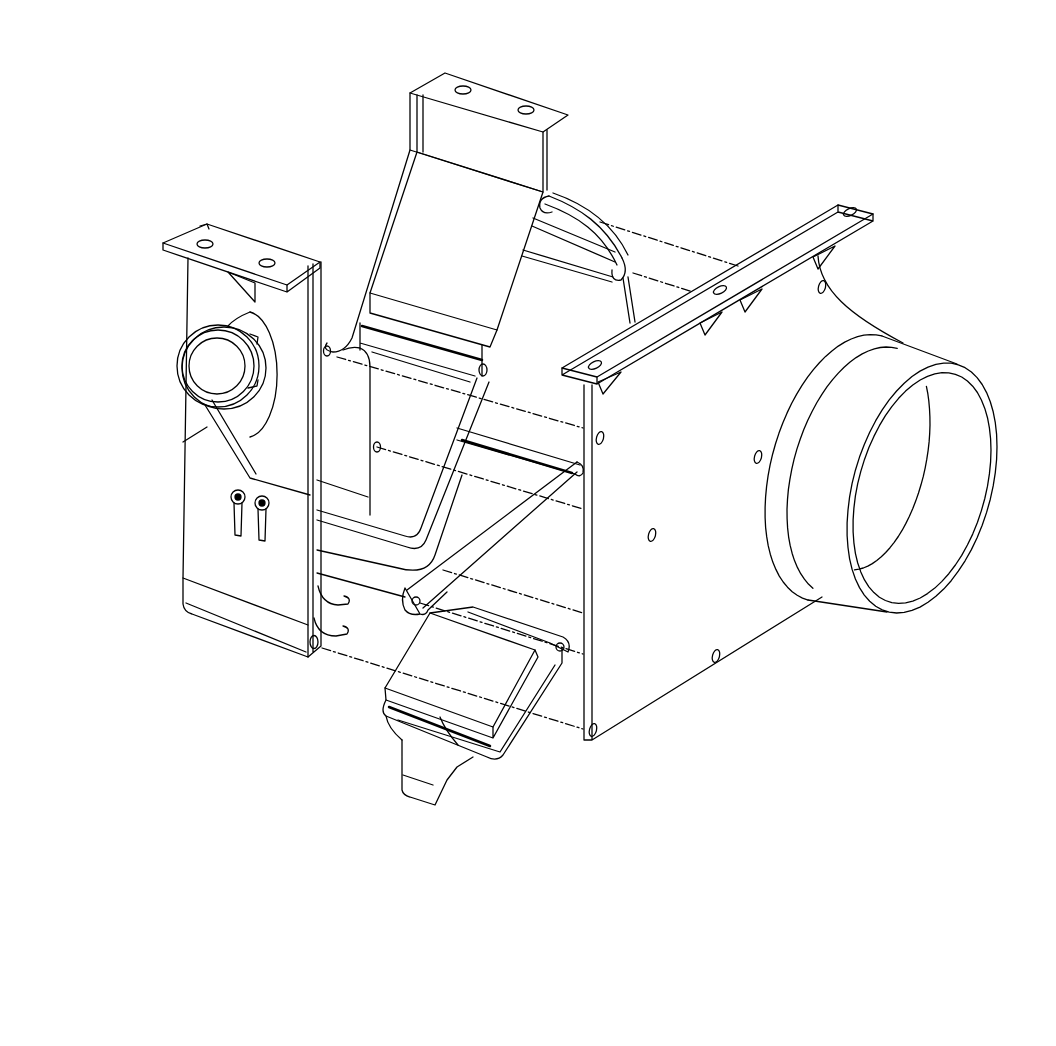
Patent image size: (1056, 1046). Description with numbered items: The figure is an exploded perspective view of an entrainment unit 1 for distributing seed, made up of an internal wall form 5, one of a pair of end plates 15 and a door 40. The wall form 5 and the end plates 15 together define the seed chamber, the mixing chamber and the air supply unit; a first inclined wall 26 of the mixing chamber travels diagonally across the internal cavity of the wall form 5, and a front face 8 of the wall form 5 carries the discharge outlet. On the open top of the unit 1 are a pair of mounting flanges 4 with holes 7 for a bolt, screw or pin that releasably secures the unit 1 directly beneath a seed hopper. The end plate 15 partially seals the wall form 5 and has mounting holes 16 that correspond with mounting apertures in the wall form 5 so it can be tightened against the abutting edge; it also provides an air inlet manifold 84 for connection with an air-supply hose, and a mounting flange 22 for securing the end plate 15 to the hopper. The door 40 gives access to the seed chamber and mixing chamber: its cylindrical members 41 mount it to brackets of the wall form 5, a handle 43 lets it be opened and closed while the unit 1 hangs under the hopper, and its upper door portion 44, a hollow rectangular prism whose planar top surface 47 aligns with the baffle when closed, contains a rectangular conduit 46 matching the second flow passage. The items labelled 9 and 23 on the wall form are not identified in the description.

The entrainment unit 1 is at (763, 67).
The mounting flanges 4 is at (503, 97).
The internal wall form 5 is at (162, 633).
The holes 7 is at (528, 110).
The front face 8 is at (203, 482).
The connector bracket 9 is at (250, 311).
The end plate 15 is at (725, 586).
The mounting holes 16 is at (830, 288).
The mounting flange 22 is at (837, 204).
The connector ring 23 is at (207, 405).
The first inclined wall 26 is at (474, 247).
The door 40 is at (526, 762).
The cylindrical members 41 is at (517, 620).
The handle 43 is at (420, 788).
The upper door portion 44 is at (520, 713).
The rectangular conduit 46 is at (440, 717).
The top surface 47 is at (482, 674).
The air inlet manifold 84 is at (923, 492).